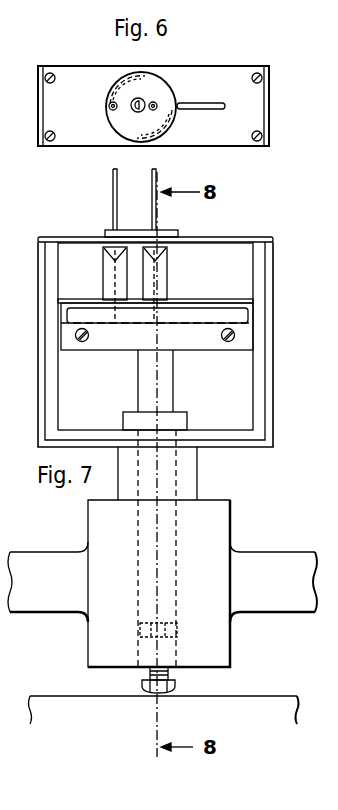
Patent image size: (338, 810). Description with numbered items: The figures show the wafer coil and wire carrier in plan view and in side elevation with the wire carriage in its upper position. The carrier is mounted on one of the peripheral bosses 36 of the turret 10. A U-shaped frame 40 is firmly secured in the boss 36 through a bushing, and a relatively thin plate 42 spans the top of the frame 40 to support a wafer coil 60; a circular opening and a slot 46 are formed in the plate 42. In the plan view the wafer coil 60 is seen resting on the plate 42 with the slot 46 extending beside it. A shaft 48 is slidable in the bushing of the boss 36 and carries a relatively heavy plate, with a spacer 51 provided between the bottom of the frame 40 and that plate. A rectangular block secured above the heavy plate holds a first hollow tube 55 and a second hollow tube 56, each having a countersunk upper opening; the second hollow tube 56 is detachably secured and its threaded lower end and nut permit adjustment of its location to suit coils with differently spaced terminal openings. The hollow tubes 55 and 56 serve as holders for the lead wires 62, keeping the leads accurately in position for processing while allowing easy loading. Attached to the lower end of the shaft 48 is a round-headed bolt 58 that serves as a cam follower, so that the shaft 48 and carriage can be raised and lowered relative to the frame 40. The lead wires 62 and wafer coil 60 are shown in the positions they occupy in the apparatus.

In FIG. 7, the turret 10 is at (49, 561).
In FIG. 7, the peripheral boss 36 is at (231, 518).
In FIG. 7, the U-shaped frame 40 is at (268, 397).
In FIG. 7, the thin plate 42 is at (218, 237).
In FIG. 6, the slot 46 is at (199, 104).
In FIG. 7, the shaft 48 is at (174, 377).
In FIG. 7, the spacer 51 is at (187, 421).
In FIG. 7, the first hollow tube 55 is at (103, 270).
In FIG. 7, the second hollow tube 56 is at (167, 270).
In FIG. 7, the round-headed bolt 58 is at (177, 688).
In FIG. 6, the wafer coil 60 is at (106, 101).
In FIG. 7, the wafer coil 60 is at (176, 231).
In FIG. 7, the lead wires 62 is at (150, 227).